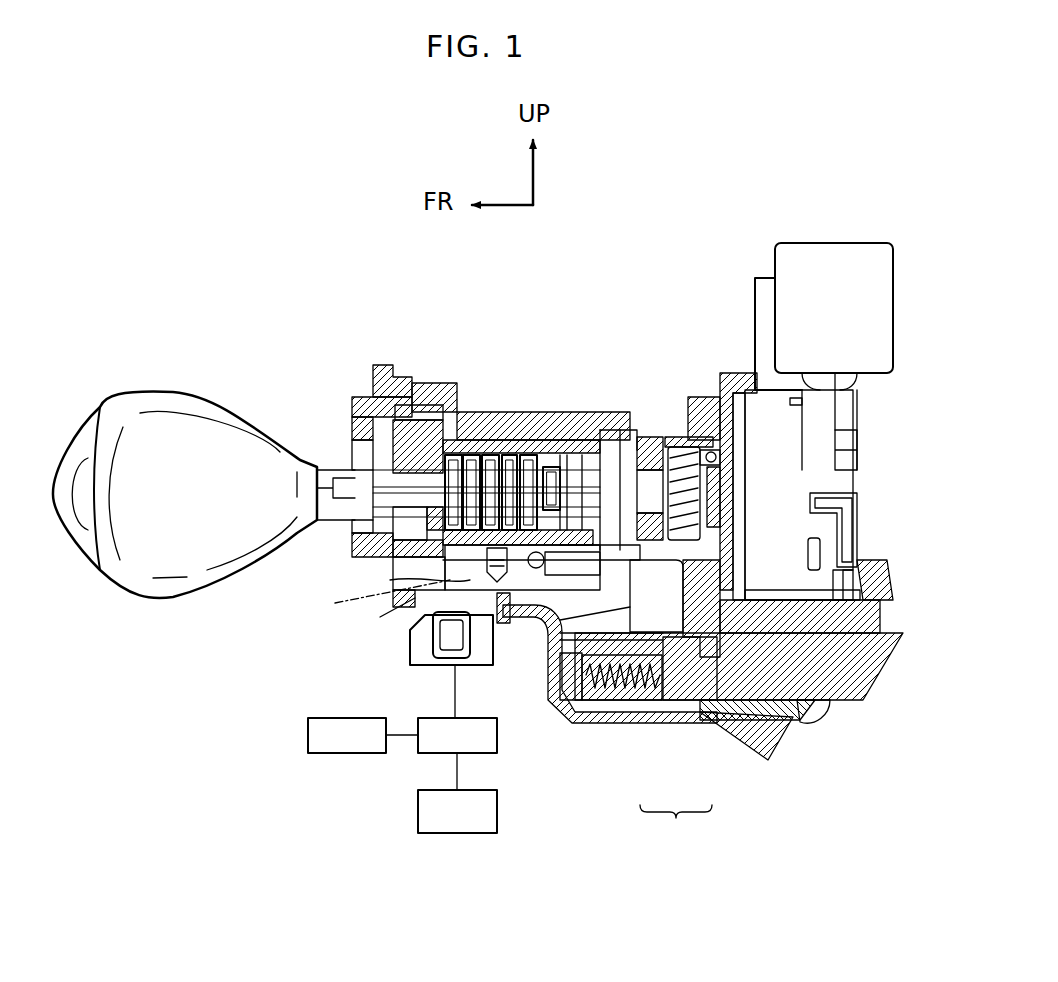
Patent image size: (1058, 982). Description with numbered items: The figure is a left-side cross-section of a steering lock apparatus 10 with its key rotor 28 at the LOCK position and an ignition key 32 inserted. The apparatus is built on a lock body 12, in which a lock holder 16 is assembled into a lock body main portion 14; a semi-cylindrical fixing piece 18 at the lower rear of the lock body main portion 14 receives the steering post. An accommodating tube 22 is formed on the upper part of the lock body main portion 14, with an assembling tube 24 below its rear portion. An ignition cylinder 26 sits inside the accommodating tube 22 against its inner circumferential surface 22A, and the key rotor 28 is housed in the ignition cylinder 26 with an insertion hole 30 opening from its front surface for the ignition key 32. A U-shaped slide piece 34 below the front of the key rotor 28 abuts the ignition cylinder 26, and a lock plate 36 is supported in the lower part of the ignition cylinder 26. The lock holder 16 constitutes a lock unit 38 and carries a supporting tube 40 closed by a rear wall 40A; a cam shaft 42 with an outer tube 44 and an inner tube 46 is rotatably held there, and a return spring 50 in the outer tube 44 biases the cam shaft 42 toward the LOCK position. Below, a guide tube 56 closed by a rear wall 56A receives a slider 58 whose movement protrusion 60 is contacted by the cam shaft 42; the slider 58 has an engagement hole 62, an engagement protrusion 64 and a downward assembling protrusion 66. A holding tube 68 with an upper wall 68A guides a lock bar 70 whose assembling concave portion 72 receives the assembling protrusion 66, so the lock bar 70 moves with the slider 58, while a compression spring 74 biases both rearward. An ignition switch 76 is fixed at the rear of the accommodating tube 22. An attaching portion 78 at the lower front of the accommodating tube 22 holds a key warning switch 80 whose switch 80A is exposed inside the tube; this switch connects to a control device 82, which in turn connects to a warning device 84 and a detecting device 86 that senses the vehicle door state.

The steering lock apparatus 10 is at (218, 252).
The lock body 12 is at (676, 827).
The lock body main portion 14 is at (640, 726).
The lock holder 16 is at (672, 724).
The fixing piece 18 is at (760, 742).
The accommodating tube 22 is at (478, 410).
The inner circumferential surface 22A is at (510, 625).
The assembling tube 24 is at (588, 724).
The ignition cylinder 26 is at (351, 411).
The key rotor 28 is at (520, 440).
The insertion hole 30 is at (416, 404).
The ignition key 32 is at (196, 394).
The slide piece 34 is at (400, 520).
The lock plate 36 is at (535, 655).
The lock unit 38 is at (890, 625).
The supporting tube 40 is at (715, 398).
The rear wall 40A is at (740, 440).
The cam shaft 42 is at (648, 436).
The outer tube 44 is at (675, 437).
The inner tube 46 is at (722, 456).
The return spring 50 is at (737, 500).
The guide tube 56 is at (745, 572).
The rear wall 56A is at (740, 592).
The slider 58 is at (725, 540).
The movement protrusion 60 is at (672, 515).
The engagement hole 62 is at (630, 705).
The engagement protrusion 64 is at (640, 612).
The assembling protrusion 66 is at (735, 700).
The holding tube 68 is at (787, 740).
The upper wall 68A is at (860, 565).
The lock bar 70 is at (845, 700).
The assembling concave portion 72 is at (700, 702).
The compression spring 74 is at (552, 700).
The ignition switch 76 is at (757, 300).
The attaching portion 78 is at (415, 630).
The key warning switch 80 is at (420, 670).
The switch 80A is at (400, 605).
The control device 82 is at (418, 752).
The warning device 84 is at (308, 737).
The detecting device 86 is at (418, 813).